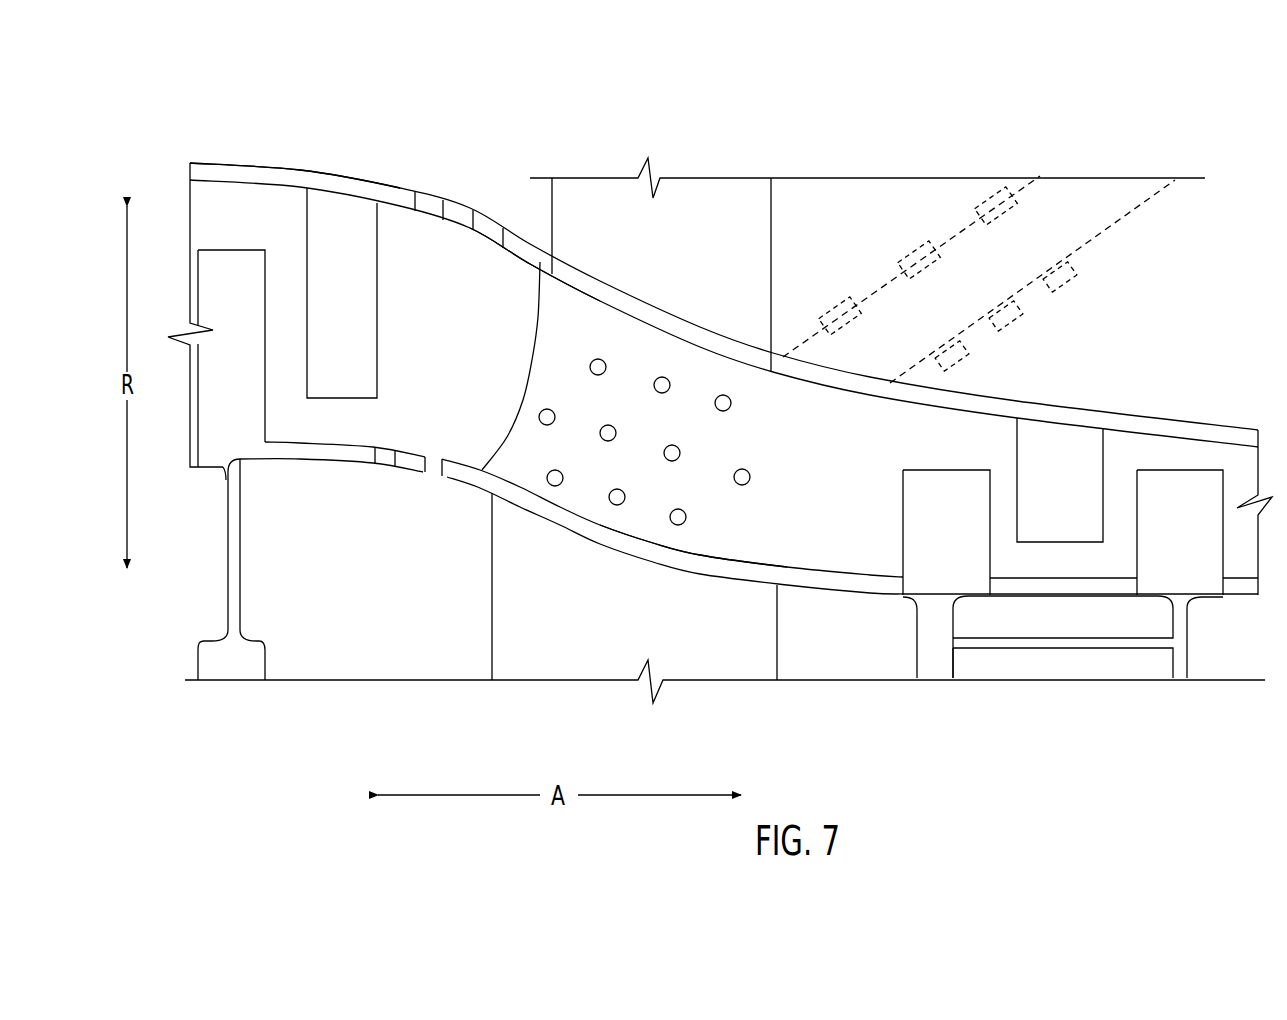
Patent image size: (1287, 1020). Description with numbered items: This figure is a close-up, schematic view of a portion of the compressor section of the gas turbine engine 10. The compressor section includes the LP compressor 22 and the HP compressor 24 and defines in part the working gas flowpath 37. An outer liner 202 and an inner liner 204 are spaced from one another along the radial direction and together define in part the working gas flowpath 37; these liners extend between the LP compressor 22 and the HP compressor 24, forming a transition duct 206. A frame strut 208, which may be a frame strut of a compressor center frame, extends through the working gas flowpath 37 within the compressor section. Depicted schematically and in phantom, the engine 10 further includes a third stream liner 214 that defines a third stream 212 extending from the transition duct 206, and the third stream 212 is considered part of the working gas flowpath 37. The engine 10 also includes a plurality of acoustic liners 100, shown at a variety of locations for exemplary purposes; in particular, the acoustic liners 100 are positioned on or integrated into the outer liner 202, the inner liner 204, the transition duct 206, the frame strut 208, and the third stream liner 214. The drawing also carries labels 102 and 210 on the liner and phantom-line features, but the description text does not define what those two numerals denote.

The gas turbine engine 10 is at (913, 108).
The LP compressor 22 is at (249, 158).
The HP compressor 24 is at (1170, 422).
The working gas flowpath 37 is at (832, 501).
The acoustic liners 100 is at (430, 190).
The hole sections 102 is at (515, 262).
The outer liner 202 is at (325, 180).
The inner liner 204 is at (797, 370).
The transition duct 206 is at (522, 213).
The frame strut 208 is at (733, 535).
The second dashed axis 210 is at (1112, 223).
The third stream 212 is at (1096, 186).
The third stream liner 214 is at (1040, 296).